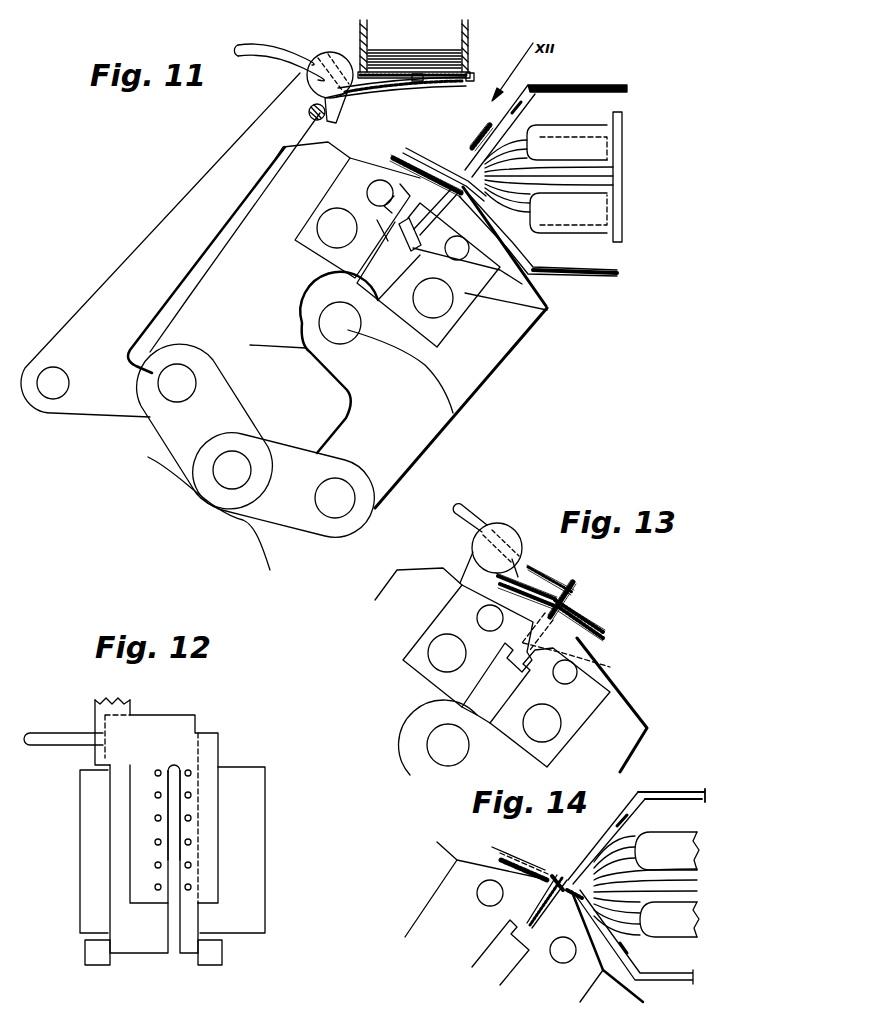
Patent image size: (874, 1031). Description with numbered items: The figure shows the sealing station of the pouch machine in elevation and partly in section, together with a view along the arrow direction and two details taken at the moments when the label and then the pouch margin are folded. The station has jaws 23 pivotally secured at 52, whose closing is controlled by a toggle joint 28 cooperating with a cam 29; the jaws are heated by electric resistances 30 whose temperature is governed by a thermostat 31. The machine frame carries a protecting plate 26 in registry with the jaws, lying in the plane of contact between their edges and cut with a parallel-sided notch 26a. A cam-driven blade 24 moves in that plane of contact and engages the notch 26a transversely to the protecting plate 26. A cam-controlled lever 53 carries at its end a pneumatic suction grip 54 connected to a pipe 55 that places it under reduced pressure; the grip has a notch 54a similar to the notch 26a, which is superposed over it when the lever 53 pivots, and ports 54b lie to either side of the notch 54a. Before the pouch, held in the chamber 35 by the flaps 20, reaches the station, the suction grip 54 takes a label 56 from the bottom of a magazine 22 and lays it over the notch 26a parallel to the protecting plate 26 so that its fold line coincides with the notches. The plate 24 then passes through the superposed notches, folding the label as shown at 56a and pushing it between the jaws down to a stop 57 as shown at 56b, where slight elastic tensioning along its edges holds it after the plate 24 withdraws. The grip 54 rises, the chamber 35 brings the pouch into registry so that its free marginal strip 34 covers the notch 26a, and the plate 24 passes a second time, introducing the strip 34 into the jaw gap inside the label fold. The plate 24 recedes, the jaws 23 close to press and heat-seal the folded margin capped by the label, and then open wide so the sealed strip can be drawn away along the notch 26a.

In FIG. 11, the flaps 20 is at (548, 306).
In FIG. 11, the magazine 22 is at (460, 40).
In FIG. 11, the jaws 23 is at (466, 291).
In FIG. 11, the blade (plate) 24 is at (480, 138).
In FIG. 13, the blade (plate) 24 is at (567, 583).
In FIG. 11, the protecting plate 26 is at (410, 152).
In FIG. 12, the protecting plate 26 is at (142, 943).
In FIG. 13, the protecting plate 26 is at (565, 623).
In FIG. 14, the protecting plate 26 is at (496, 860).
In FIG. 11, the notch 26a is at (410, 170).
In FIG. 12, the notch 26a is at (177, 945).
In FIG. 11, the toggle joint 28 is at (202, 487).
In FIG. 11, the cam 29 is at (264, 555).
In FIG. 11, the electric resistances 30 is at (325, 222).
In FIG. 11, the thermostat 31 is at (368, 192).
In FIG. 11, the free marginal strip 34 is at (446, 172).
In FIG. 11, the chamber 35 is at (587, 132).
In FIG. 13, the chamber 35 is at (478, 518).
In FIG. 11, the pivot 52 is at (455, 411).
In FIG. 11, the lever 53 is at (272, 116).
In FIG. 11, the pneumatic suction grip 54 is at (471, 77).
In FIG. 12, the pneumatic suction grip 54 is at (210, 755).
In FIG. 12, the notch of suction grip 54a is at (175, 878).
In FIG. 12, the ports 54b is at (155, 818).
In FIG. 11, the pipe 55 is at (279, 49).
In FIG. 13, the label 56 is at (593, 607).
In FIG. 13, the folded label position 56a is at (572, 592).
In FIG. 13, the label position in jaw gap 56b is at (577, 647).
In FIG. 13, the stop 57 is at (517, 655).